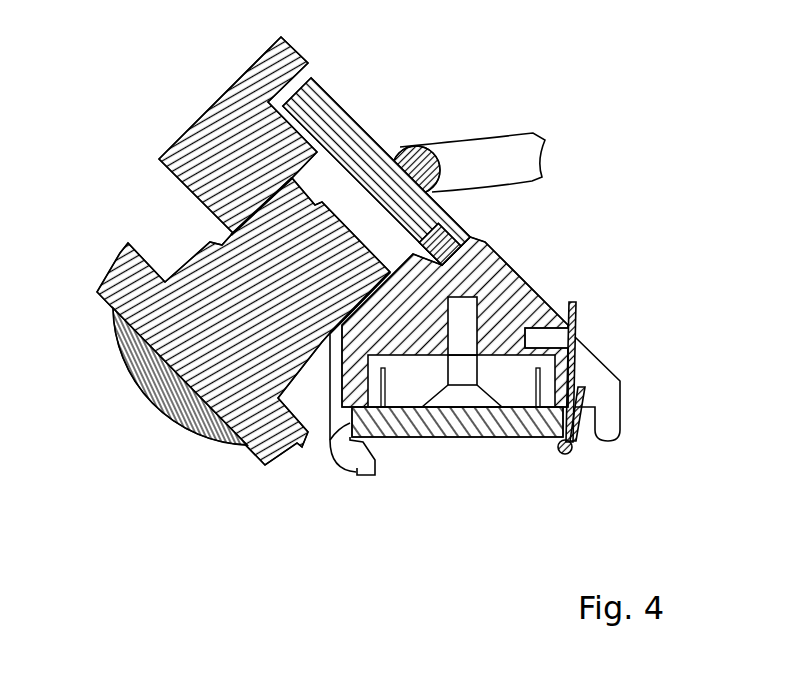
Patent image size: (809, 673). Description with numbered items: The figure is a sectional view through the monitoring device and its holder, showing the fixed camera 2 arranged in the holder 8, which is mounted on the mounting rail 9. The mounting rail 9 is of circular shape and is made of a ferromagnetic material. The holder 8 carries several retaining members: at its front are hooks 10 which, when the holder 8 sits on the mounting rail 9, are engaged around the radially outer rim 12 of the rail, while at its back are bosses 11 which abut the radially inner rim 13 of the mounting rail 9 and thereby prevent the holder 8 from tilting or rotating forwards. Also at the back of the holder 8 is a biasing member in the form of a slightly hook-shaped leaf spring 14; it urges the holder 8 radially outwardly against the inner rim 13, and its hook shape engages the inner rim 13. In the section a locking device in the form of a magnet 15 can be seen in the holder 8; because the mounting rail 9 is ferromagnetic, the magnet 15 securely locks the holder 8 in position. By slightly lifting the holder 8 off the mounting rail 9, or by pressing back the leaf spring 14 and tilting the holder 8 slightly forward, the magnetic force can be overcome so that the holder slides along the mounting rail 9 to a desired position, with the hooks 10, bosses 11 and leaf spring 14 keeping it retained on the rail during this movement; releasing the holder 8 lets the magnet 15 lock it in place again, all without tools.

The fixed camera 2 is at (100, 310).
The holder 8 is at (253, 102).
The mounting rail 9 is at (450, 427).
The hook 10 is at (357, 470).
The boss 11 is at (612, 408).
The radially outer rim 12 is at (330, 440).
The radially inner rim 13 is at (573, 447).
The leaf spring 14 is at (570, 452).
The magnet 15 is at (473, 397).